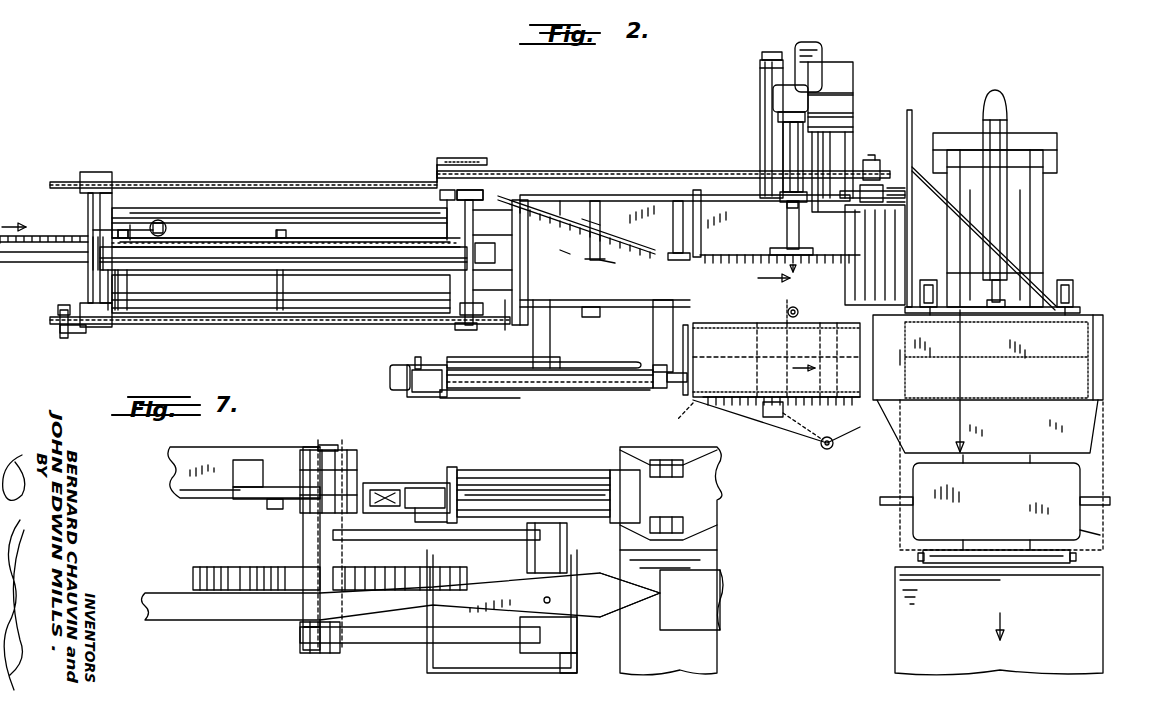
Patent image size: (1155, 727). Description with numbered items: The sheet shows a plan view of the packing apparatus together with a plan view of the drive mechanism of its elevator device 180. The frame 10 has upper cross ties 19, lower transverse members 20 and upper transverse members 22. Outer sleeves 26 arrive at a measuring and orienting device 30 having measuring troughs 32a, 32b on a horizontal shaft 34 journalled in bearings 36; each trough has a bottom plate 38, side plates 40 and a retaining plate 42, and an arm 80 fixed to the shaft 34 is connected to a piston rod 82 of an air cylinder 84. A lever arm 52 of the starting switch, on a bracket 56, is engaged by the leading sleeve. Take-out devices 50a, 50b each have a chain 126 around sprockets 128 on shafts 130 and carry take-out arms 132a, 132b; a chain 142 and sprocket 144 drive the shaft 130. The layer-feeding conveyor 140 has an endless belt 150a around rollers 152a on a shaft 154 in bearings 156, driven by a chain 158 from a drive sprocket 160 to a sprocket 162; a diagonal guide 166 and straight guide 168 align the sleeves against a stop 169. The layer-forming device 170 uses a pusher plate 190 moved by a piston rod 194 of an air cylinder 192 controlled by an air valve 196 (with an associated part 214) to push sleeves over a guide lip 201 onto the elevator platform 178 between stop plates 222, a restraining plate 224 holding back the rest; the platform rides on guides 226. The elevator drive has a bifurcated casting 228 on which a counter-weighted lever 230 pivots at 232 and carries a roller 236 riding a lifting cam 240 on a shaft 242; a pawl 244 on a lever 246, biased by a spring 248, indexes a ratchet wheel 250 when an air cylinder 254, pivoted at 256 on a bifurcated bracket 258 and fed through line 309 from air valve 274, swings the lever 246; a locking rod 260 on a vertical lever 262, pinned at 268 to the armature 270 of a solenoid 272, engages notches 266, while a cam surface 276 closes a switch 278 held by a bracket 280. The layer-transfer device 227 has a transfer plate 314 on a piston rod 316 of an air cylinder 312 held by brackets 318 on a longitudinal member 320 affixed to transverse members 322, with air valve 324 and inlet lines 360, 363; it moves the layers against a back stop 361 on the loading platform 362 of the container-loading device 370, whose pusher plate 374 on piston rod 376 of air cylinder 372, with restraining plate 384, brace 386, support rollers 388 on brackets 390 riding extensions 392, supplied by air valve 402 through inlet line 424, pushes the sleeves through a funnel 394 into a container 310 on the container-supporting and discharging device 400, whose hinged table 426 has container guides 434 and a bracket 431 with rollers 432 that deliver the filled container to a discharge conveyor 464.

In FIG. 2, the frame 10 is at (383, 170).
In FIG. 2, the upper cross ties 19 is at (132, 224).
In FIG. 7, the lower transverse members 20 is at (208, 450).
In FIG. 2, the upper transverse members 22 is at (1040, 200).
In FIG. 2, the outer sleeves 26 is at (742, 421).
In FIG. 2, the measuring and orienting device 30 is at (280, 208).
In FIG. 2, the measuring trough 32a is at (295, 240).
In FIG. 2, the measuring trough 32b is at (205, 305).
In FIG. 2, the horizontal shaft 34 is at (65, 252).
In FIG. 2, the bearings 36 is at (90, 262).
In FIG. 2, the longitudinal bottom plate 38 is at (200, 240).
In FIG. 2, the side plates 40 is at (215, 240).
In FIG. 2, the retaining plate 42 is at (330, 258).
In FIG. 2, the take-out device 50a is at (265, 232).
In FIG. 2, the take-out device 50b is at (246, 325).
In FIG. 2, the lever arm 52 is at (478, 244).
In FIG. 2, the bracket 56 is at (497, 254).
In FIG. 2, the arm 80 is at (170, 230).
In FIG. 2, the piston rod 82 is at (110, 230).
In FIG. 2, the air cylinder 84 is at (158, 220).
In FIG. 2, the chain 126 is at (348, 178).
In FIG. 2, the sprockets 128 is at (66, 183).
In FIG. 2, the shafts 130 is at (90, 333).
In FIG. 2, the take-out arm 132a is at (500, 194).
In FIG. 2, the take-out arm 132b is at (56, 305).
In FIG. 2, the layer-feeding conveyor 140 is at (610, 190).
In FIG. 2, the chain 142 is at (485, 168).
In FIG. 2, the sprocket 144 is at (462, 158).
In FIG. 2, the endless belt 150a is at (640, 195).
In FIG. 2, the rollers 152a is at (455, 194).
In FIG. 2, the shaft 154 is at (886, 185).
In FIG. 2, the bearings 156 is at (885, 190).
In FIG. 2, the chain 158 is at (572, 171).
In FIG. 2, the drive sprocket 160 is at (437, 170).
In FIG. 2, the sprocket 162 is at (868, 160).
In FIG. 2, the diagonal guide 166 is at (575, 225).
In FIG. 2, the straight guide 168 is at (575, 303).
In FIG. 2, the stop 169 is at (870, 290).
In FIG. 2, the layer-forming device 170 is at (745, 262).
In FIG. 7, the layer-forming device 170 is at (295, 640).
In FIG. 2, the elevator platform 178 is at (775, 432).
In FIG. 2, the elevator device 180 is at (822, 455).
In FIG. 2, the pusher plate 190 is at (730, 248).
In FIG. 2, the air cylinder 192 is at (783, 135).
In FIG. 2, the piston rod 194 is at (787, 238).
In FIG. 2, the solenoid-operated air valve 196 is at (760, 90).
In FIG. 2, the guide lip 201 is at (695, 300).
In FIG. 2, the piston rod 214 is at (790, 140).
In FIG. 2, the stop plates 222 is at (735, 390).
In FIG. 2, the restraining plate 224 is at (697, 188).
In FIG. 2, the guides 226 is at (788, 305).
In FIG. 2, the layer-transfer device 227 is at (487, 391).
In FIG. 2, the bifurcated casting 228 is at (823, 60).
In FIG. 7, the bifurcated casting 228 is at (435, 648).
In FIG. 7, the counter-weighted lever 230 is at (160, 598).
In FIG. 7, the pivot 232 is at (577, 665).
In FIG. 7, the roller 236 is at (300, 628).
In FIG. 7, the lifting cam 240 is at (215, 567).
In FIG. 7, the horizontal shaft 242 is at (328, 445).
In FIG. 7, the pawl 244 is at (262, 460).
In FIG. 7, the lever 246 is at (236, 498).
In FIG. 7, the spring 248 is at (180, 470).
In FIG. 7, the ratchet wheel 250 is at (368, 483).
In FIG. 2, the air cylinder 254 is at (773, 98).
In FIG. 7, the air cylinder 254 is at (625, 480).
In FIG. 7, the pivot 256 is at (670, 460).
In FIG. 2, the bifurcated bracket 258 is at (768, 55).
In FIG. 7, the bifurcated bracket 258 is at (717, 515).
In FIG. 7, the locking rod 260 is at (455, 578).
In FIG. 7, the vertical lever 262 is at (445, 560).
In FIG. 7, the peripheral notches 266 is at (250, 567).
In FIG. 7, the pin 268 is at (478, 530).
In FIG. 7, the armature 270 is at (515, 530).
In FIG. 7, the solenoid 272 is at (560, 570).
In FIG. 7, the solenoid-operated air valve 274 is at (613, 470).
In FIG. 7, the cam surface 276 is at (415, 488).
In FIG. 7, the normally-open switch 278 is at (423, 488).
In FIG. 7, the bracket 280 is at (452, 467).
In FIG. 7, the line 309 is at (548, 480).
In FIG. 2, the container 310 is at (898, 540).
In FIG. 2, the air cylinder 312 is at (445, 358).
In FIG. 2, the transfer plate 314 is at (683, 335).
In FIG. 2, the piston rod 316 is at (670, 383).
In FIG. 2, the brackets 318 is at (418, 357).
In FIG. 2, the longitudinal member 320 is at (540, 390).
In FIG. 2, the transverse members 322 is at (650, 300).
In FIG. 2, the solenoid operated air-valve 324 is at (390, 378).
In FIG. 2, the inlet line 360 is at (420, 397).
In FIG. 2, the back stop 361 is at (1080, 372).
In FIG. 2, the loading platform 362 is at (1080, 348).
In FIG. 2, the inlet line 363 is at (590, 360).
In FIG. 2, the container-loading device 370 is at (1050, 190).
In FIG. 2, the air cylinder 372 is at (1007, 130).
In FIG. 2, the pusher plate 374 is at (1082, 310).
In FIG. 2, the piston rod 376 is at (1010, 310).
In FIG. 2, the restraining plate 384 is at (910, 115).
In FIG. 2, the brace 386 is at (1005, 262).
In FIG. 2, the support rollers 388 is at (928, 280).
In FIG. 2, the brackets 390 is at (1073, 300).
In FIG. 2, the extensions 392 is at (922, 285).
In FIG. 2, the funnel 394 is at (1090, 436).
In FIG. 2, the container-supporting and discharging device 400 is at (1085, 530).
In FIG. 2, the air valve 402 is at (1000, 95).
In FIG. 2, the inlet line 424 is at (992, 150).
In FIG. 2, the hinged table 426 is at (1068, 485).
In FIG. 2, the bracket 431 is at (915, 558).
In FIG. 2, the rollers 432 is at (958, 565).
In FIG. 2, the container guides 434 is at (1090, 502).
In FIG. 2, the discharge conveyor 464 is at (895, 627).